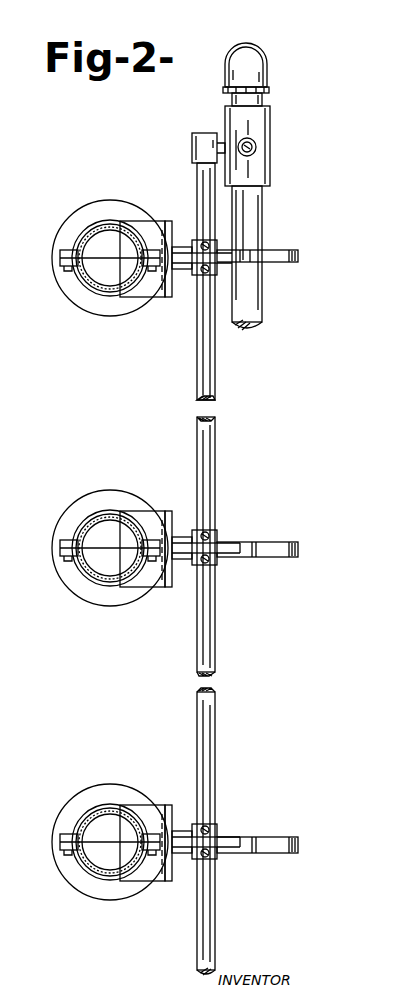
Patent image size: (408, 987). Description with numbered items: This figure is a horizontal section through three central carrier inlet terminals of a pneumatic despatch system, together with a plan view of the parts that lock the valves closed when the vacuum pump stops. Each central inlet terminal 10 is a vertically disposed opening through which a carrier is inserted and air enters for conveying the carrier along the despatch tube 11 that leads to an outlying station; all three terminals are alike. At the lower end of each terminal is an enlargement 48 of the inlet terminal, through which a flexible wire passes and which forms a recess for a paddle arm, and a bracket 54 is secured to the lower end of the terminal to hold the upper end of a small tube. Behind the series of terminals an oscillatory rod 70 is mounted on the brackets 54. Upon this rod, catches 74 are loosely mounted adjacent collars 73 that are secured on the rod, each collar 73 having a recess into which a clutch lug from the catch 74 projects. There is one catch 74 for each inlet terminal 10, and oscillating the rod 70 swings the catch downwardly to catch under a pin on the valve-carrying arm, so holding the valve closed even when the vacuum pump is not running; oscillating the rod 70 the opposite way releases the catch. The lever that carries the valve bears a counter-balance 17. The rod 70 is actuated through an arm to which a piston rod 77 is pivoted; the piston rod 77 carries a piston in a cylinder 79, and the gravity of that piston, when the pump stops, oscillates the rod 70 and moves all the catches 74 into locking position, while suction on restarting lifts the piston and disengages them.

The central inlet terminal 10 is at (88, 227).
The despatch tube 11 is at (112, 226).
The counter-balance 17 is at (277, 253).
The enlargement of the inlet terminal 48 is at (160, 225).
The bracket 54 is at (180, 249).
The oscillatory rod 70 is at (197, 186).
The collar 73 is at (193, 274).
The catch 74 is at (222, 262).
The piston rod 77 is at (256, 147).
The cylinder 79 is at (268, 113).